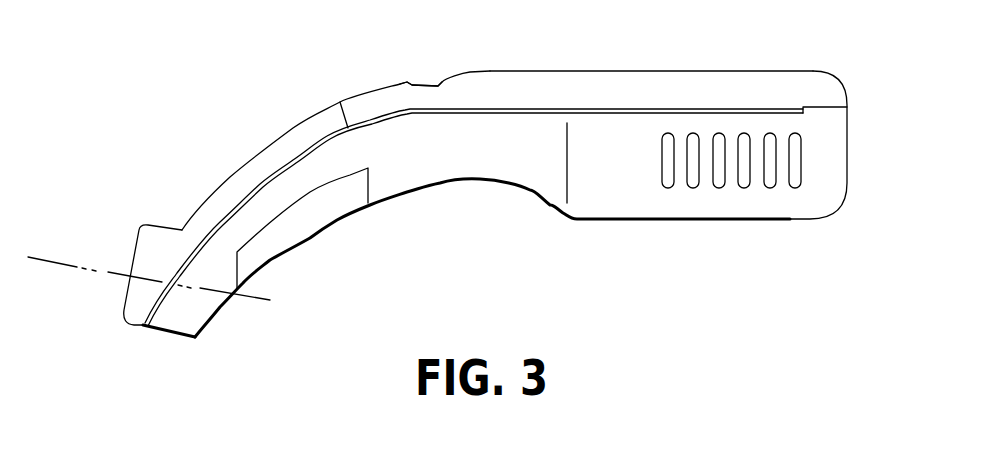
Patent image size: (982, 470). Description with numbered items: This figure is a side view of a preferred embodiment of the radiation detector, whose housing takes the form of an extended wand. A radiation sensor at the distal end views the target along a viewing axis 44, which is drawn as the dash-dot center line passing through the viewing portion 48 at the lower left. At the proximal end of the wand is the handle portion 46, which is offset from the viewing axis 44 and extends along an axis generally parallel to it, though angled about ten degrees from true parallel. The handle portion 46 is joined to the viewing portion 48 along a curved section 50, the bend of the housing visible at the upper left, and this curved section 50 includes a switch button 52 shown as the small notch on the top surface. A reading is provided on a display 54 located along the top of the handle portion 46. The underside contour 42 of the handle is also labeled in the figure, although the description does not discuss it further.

The finger grip recess of handle 42 is at (495, 182).
The viewing axis 44 is at (62, 265).
The handle portion 46 is at (840, 88).
The viewing portion 48 is at (178, 333).
The curved section 50 is at (295, 127).
The switch button 52 is at (438, 83).
The display 54 is at (690, 72).